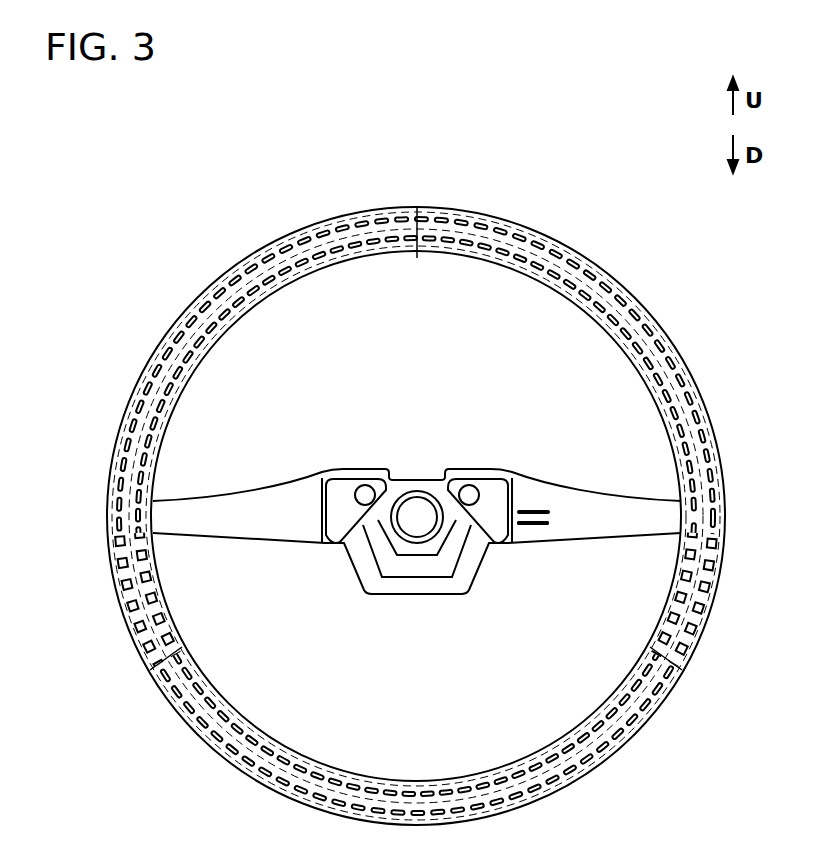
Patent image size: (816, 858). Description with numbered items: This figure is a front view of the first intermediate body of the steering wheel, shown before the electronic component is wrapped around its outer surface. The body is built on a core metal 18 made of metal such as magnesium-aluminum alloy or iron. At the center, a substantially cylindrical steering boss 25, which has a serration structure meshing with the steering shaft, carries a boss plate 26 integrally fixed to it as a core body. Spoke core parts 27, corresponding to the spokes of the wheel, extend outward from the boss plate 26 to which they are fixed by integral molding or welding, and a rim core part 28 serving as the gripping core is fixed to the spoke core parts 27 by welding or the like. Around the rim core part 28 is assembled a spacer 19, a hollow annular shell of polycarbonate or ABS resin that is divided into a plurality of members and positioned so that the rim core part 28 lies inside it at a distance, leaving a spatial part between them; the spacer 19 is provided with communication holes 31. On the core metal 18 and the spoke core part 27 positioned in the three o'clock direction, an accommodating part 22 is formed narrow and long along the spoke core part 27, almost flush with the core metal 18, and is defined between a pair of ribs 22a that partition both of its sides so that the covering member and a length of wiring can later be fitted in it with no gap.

The core metal 18 is at (547, 244).
The spacer 19 is at (595, 266).
The communication holes 31 is at (697, 342).
The rim core part 28 is at (720, 463).
The spoke core parts 27 is at (255, 493).
The steering boss 25 is at (417, 491).
The boss plate 26 is at (472, 471).
The accommodating part 22 is at (545, 516).
The ribs 22a is at (534, 528).